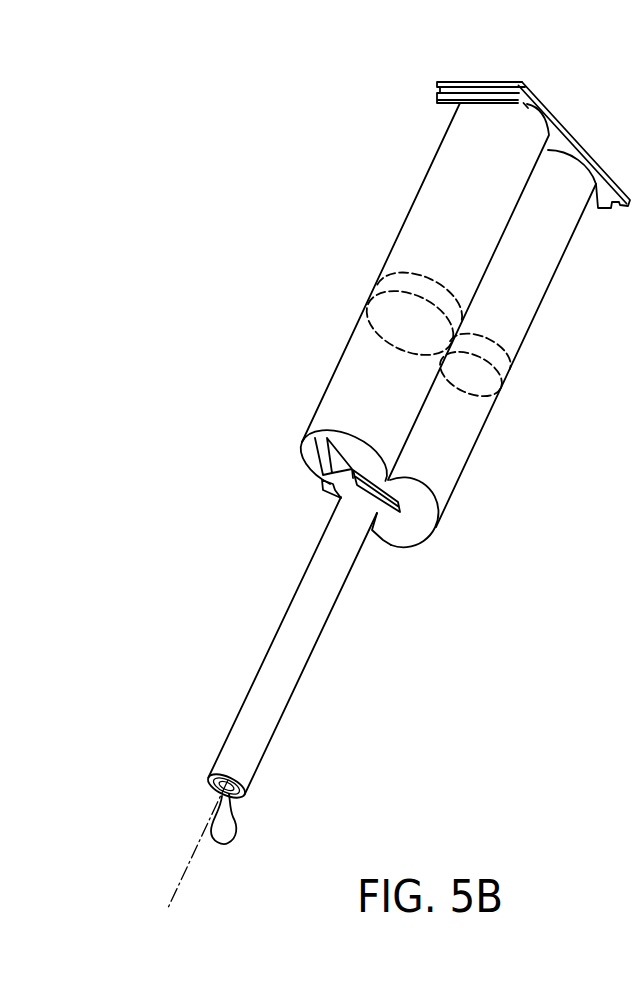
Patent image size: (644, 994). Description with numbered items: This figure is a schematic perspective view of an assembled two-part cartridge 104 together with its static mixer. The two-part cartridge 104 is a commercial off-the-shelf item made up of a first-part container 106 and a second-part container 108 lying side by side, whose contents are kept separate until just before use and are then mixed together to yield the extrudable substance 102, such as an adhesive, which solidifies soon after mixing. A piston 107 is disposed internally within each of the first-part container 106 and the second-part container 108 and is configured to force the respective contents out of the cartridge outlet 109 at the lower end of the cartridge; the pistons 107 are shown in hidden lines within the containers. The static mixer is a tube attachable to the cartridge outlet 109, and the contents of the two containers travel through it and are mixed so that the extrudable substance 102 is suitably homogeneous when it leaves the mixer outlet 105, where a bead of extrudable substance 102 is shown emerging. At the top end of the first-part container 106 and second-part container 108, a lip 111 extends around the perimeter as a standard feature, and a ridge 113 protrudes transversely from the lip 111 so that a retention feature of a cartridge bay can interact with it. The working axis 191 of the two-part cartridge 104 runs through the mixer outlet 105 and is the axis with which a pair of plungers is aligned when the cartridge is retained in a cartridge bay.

The extrudable substance 102 is at (238, 826).
The two-part cartridge 104 is at (332, 372).
The mixer outlet 105 is at (203, 792).
The first-part container 106 is at (423, 184).
The piston 107 is at (377, 287).
The second-part container 108 is at (467, 467).
The cartridge outlet 109 is at (318, 495).
The lip 111 is at (547, 103).
The ridge 113 is at (438, 98).
The working axis 191 is at (173, 896).